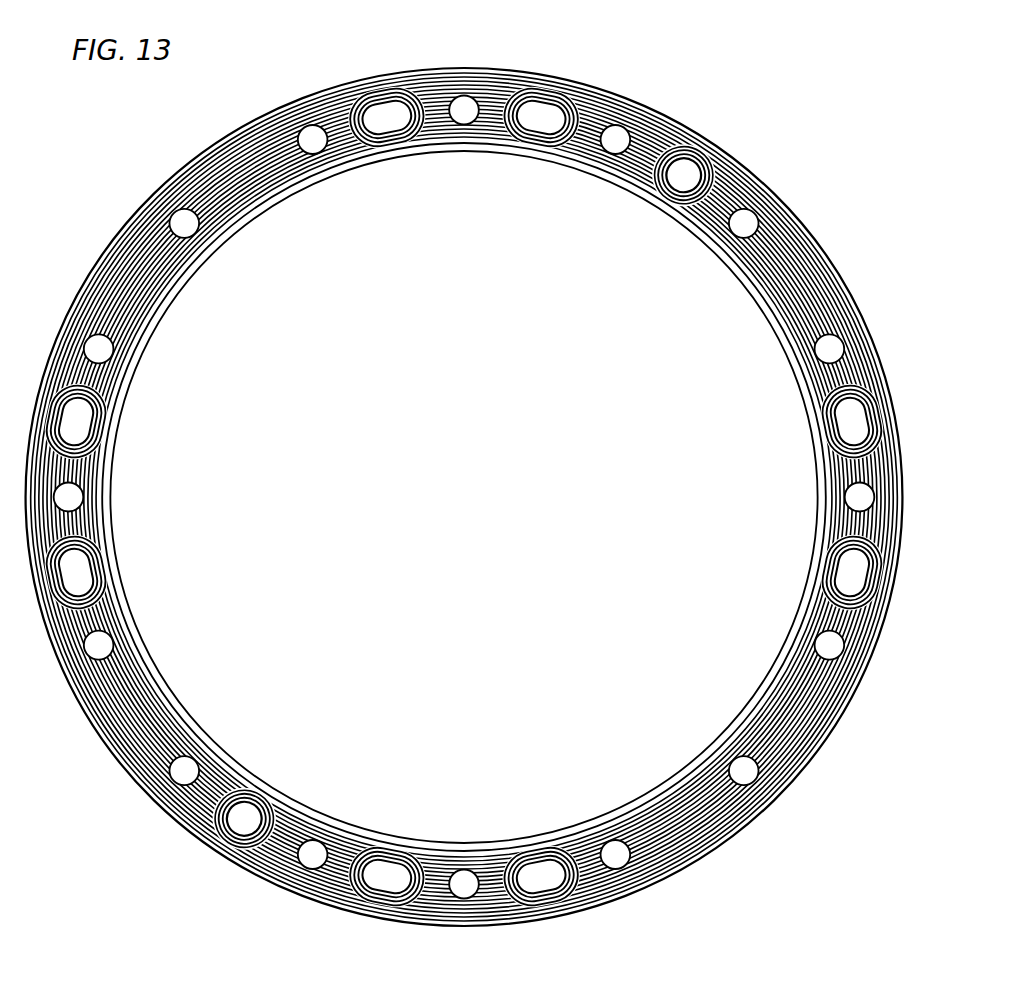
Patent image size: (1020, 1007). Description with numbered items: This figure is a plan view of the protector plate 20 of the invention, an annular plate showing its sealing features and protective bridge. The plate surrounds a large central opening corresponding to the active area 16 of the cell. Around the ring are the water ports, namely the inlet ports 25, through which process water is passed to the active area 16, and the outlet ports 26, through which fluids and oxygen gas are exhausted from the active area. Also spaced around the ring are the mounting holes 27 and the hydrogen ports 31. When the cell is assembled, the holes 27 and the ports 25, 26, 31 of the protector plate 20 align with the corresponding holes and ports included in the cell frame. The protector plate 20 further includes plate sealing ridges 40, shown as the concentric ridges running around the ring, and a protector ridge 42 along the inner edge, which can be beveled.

The active area 16 is at (497, 494).
The protector plate 20 is at (704, 80).
The inlet ports 25 is at (80, 427).
The outlet ports 26 is at (403, 95).
The mounting holes 27 is at (835, 333).
The hydrogen ports 31 is at (707, 160).
The plate sealing ridges 40 is at (823, 726).
The protector ridge 42 is at (232, 762).